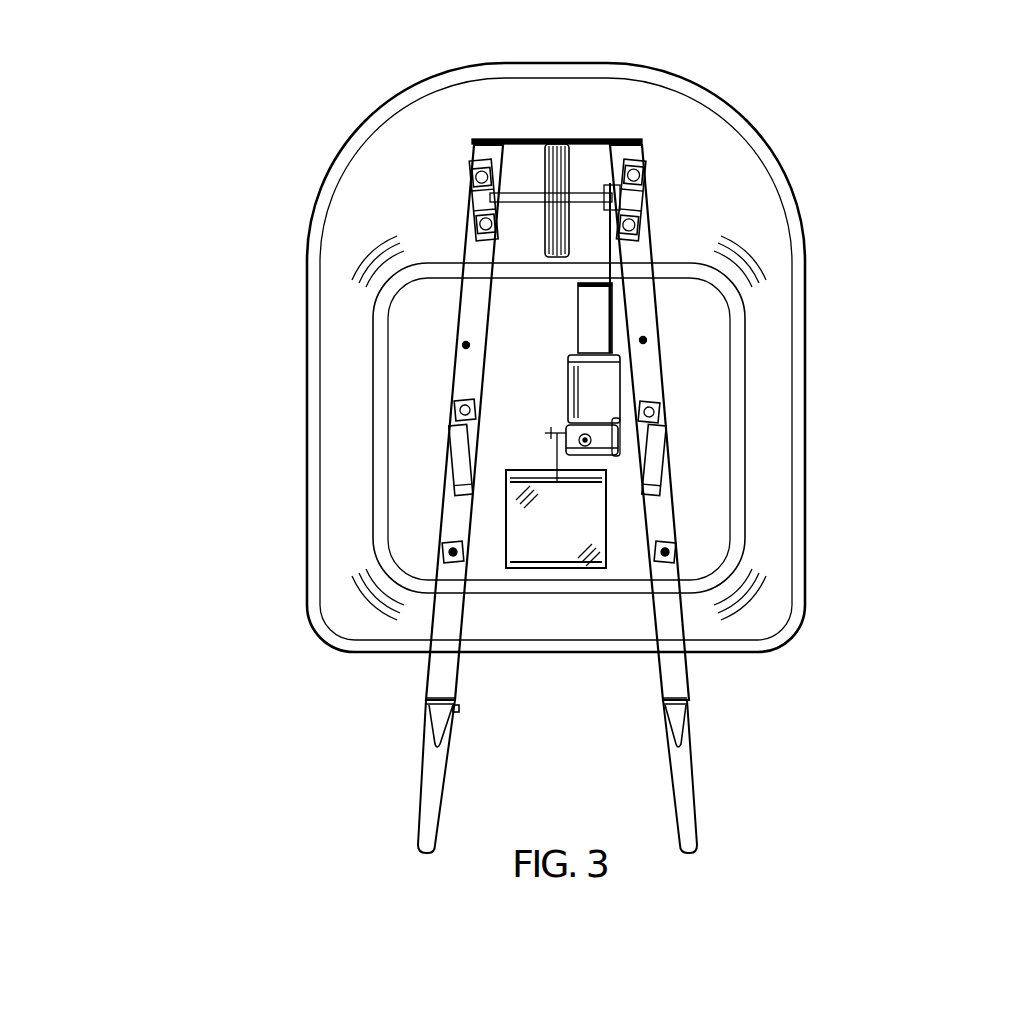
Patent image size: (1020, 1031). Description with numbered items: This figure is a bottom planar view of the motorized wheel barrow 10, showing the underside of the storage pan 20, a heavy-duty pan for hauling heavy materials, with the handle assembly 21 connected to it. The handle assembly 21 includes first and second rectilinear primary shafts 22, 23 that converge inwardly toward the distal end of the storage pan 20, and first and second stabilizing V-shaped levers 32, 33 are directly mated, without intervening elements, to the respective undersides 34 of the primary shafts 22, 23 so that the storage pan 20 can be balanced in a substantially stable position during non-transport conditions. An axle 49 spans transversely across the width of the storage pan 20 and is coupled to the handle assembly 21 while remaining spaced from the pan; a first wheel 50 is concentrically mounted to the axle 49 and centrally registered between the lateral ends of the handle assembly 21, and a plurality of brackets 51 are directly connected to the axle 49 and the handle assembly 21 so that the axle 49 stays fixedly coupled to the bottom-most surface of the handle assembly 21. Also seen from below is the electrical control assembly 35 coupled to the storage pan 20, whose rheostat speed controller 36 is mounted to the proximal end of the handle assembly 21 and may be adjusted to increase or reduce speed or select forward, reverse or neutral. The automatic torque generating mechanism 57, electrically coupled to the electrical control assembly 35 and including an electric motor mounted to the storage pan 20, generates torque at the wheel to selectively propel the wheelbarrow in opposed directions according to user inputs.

The motorized wheel barrow 10 is at (170, 694).
The storage pan 20 is at (768, 207).
The handle assembly 21 is at (667, 679).
The first rectilinear primary shaft 22 is at (680, 758).
The second rectilinear primary shaft 23 is at (437, 670).
The first stabilizing V-shaped lever 32 is at (650, 445).
The second stabilizing V-shaped lever 33 is at (462, 452).
The undersides of the primary shafts 34 is at (468, 369).
The electrical control assembly 35 is at (560, 540).
The rheostat speed controller 36 is at (458, 712).
The axle 49 is at (497, 202).
The first wheel 50 is at (551, 162).
The brackets 51 is at (490, 197).
The automatic torque generating mechanism 57 is at (536, 345).